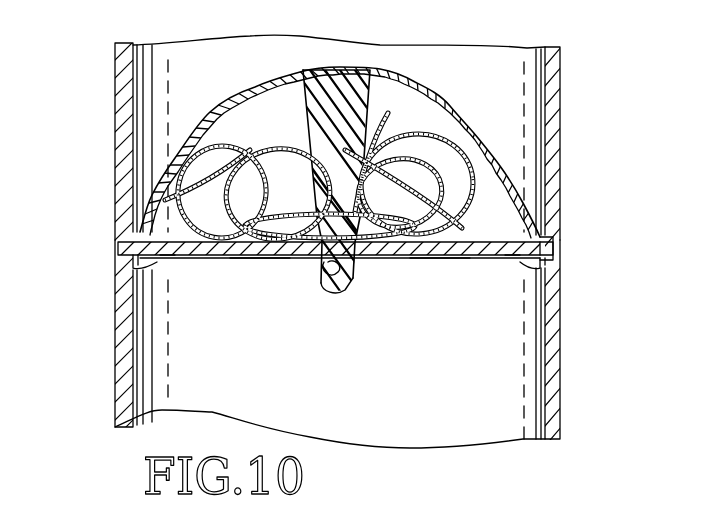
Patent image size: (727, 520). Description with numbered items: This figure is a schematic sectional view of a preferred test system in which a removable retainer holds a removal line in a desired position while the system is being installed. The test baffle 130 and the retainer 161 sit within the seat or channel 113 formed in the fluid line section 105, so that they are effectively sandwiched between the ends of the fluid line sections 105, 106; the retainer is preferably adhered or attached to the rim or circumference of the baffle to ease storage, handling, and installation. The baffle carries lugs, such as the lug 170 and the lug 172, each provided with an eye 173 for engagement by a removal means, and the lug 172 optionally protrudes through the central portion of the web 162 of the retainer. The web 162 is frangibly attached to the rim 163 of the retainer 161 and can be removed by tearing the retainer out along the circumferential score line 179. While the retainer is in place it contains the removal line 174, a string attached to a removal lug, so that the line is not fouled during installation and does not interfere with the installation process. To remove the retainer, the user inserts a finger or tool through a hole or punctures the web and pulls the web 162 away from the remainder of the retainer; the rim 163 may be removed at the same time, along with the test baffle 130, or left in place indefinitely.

The fluid line section 105 is at (560, 343).
The fluid line section 106 is at (560, 133).
The seat or channel 113 is at (560, 247).
The test baffle 130 is at (367, 70).
The retainer 161 is at (257, 257).
The web 162 is at (443, 257).
The rim 163 is at (135, 268).
The lug 170 is at (373, 100).
The lug 172 is at (307, 108).
The eye 173 is at (353, 278).
The removal line 174 is at (178, 196).
The circumferential score line 179 is at (167, 255).